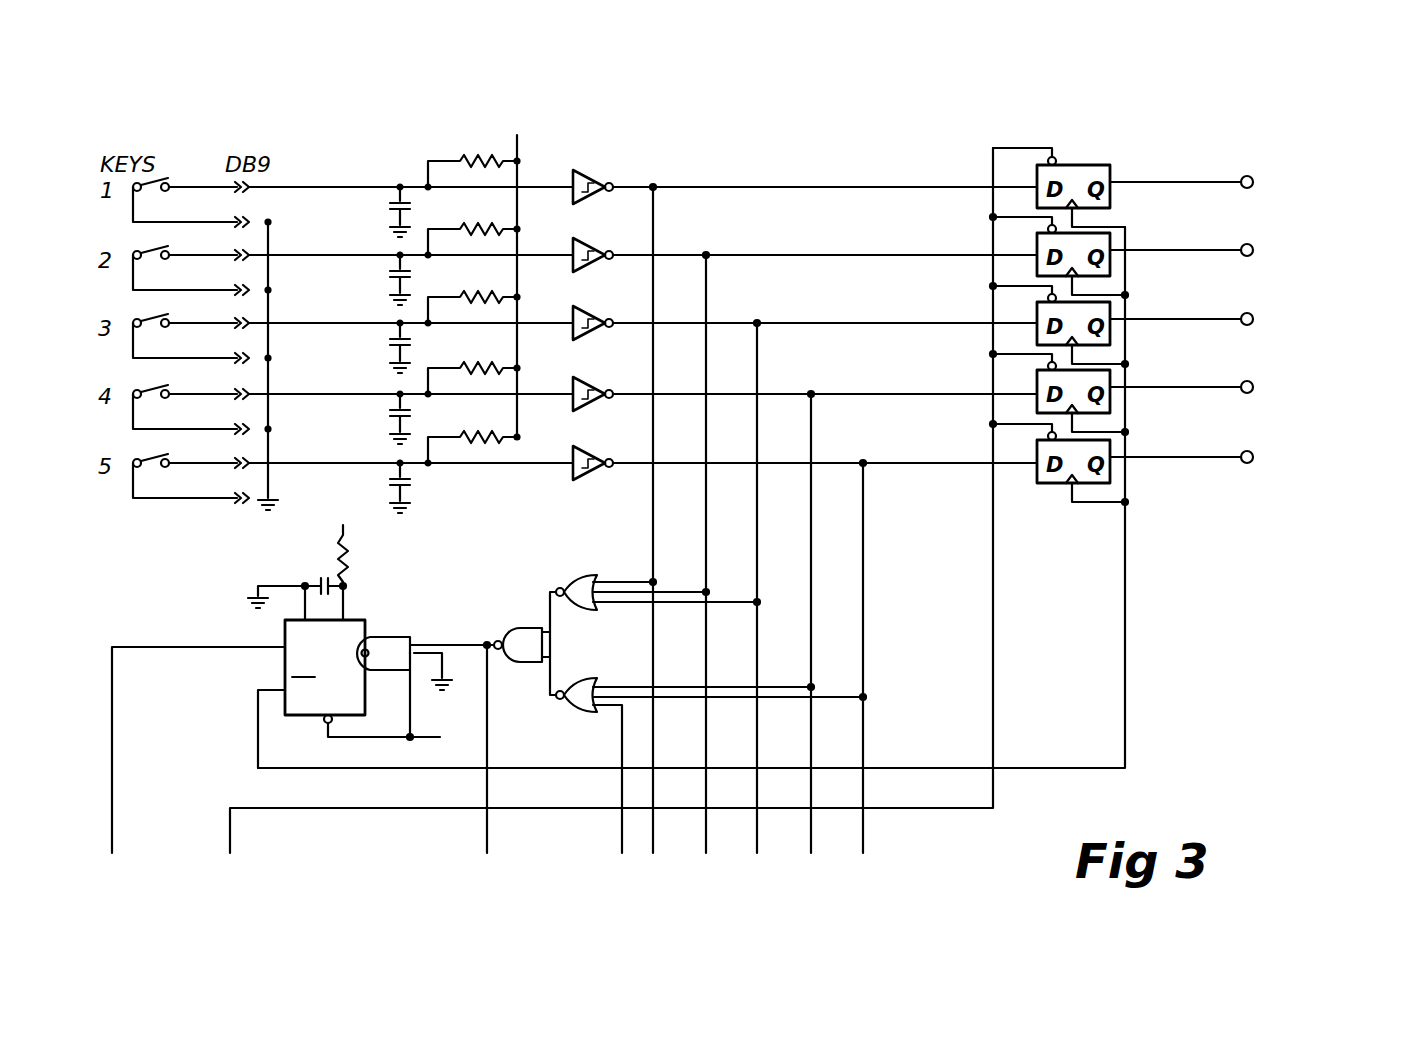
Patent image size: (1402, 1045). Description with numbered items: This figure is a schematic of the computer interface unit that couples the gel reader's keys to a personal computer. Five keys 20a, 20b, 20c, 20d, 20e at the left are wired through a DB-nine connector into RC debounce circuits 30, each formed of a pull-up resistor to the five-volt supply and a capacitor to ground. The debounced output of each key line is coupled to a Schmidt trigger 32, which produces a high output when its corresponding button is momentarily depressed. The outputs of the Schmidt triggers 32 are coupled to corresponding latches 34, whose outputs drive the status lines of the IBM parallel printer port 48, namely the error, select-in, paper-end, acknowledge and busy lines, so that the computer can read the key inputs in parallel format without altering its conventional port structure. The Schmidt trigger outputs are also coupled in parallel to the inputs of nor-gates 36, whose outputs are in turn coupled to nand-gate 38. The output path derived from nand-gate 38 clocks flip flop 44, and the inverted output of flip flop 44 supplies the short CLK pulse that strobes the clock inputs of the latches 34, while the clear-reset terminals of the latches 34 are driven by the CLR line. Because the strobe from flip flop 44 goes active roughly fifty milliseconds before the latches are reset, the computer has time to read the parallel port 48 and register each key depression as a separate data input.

The key 20a is at (168, 178).
The key 20b is at (122, 268).
The key 20c is at (125, 338).
The key 20d is at (128, 406).
The key switch 5 20e is at (145, 480).
The RC debounce circuits 30 is at (414, 150).
The Schmidt trigger 32 is at (608, 178).
The latches 34 is at (1085, 165).
The nor-gates 36 is at (560, 582).
The nand-gate 38 is at (520, 628).
The flip flop 44 is at (285, 663).
The parallel port 48 is at (1302, 368).